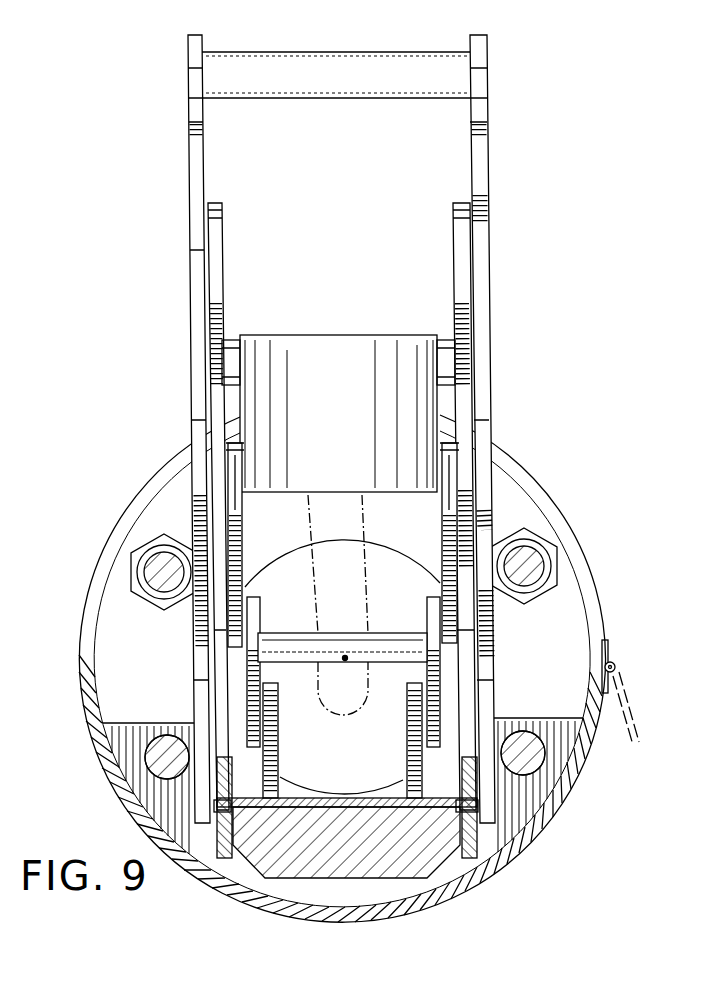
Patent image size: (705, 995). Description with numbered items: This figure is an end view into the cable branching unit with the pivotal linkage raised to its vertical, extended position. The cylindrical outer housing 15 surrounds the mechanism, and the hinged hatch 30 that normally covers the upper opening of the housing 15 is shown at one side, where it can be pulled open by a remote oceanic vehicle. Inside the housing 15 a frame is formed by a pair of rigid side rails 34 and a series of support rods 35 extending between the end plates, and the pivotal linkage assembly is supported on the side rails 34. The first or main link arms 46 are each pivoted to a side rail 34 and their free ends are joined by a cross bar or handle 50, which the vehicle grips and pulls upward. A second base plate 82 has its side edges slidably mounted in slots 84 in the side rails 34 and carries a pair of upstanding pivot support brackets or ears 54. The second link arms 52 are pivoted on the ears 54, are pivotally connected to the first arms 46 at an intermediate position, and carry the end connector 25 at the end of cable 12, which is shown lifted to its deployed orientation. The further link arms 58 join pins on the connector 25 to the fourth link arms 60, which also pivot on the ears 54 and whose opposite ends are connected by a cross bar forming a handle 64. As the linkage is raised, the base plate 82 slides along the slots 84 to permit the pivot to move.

The underwater cable 12 is at (363, 508).
The cylindrical outer housing 15 is at (525, 837).
The end connector 25 is at (328, 342).
The hinged hatch 30 is at (641, 724).
The side rail 34 is at (170, 843).
The support rod 35 is at (530, 555).
The first link arm 46 is at (189, 160).
The cross bar or handle 50 is at (312, 87).
The second link arm 52 is at (219, 248).
The pivot support bracket or ear 54 is at (408, 727).
The further link arm 58 is at (238, 522).
The fourth link arm 60 is at (253, 612).
The handle 64 is at (353, 642).
The second base plate 82 is at (340, 800).
The slot 84 is at (228, 793).